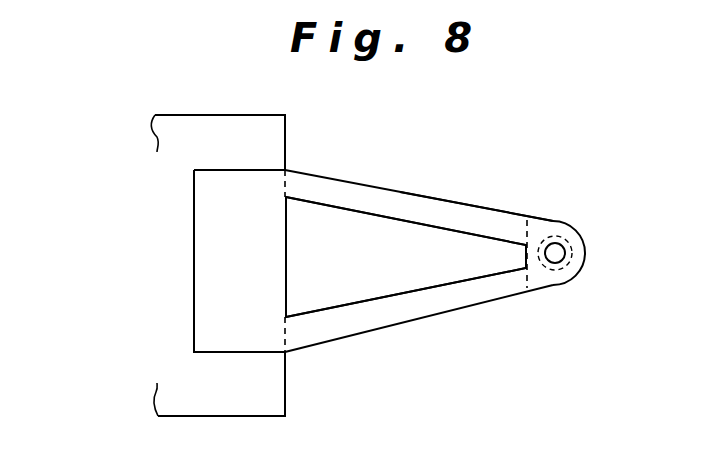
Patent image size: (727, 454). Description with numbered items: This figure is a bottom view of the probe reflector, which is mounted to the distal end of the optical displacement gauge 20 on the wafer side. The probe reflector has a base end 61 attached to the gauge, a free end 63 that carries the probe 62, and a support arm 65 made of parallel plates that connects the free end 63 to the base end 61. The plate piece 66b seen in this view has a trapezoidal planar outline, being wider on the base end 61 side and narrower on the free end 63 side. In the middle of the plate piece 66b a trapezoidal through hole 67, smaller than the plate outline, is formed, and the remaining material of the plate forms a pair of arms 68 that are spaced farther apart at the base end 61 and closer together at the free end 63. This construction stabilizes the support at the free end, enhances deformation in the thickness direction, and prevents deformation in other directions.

The optical displacement gauge 20 is at (195, 144).
The base end 61 is at (210, 283).
The probe 62 is at (557, 253).
The free end 63 is at (553, 222).
The support arm 65 is at (425, 196).
The plate piece 66b is at (475, 212).
The through hole 67 is at (442, 262).
The arm 68 is at (350, 193).